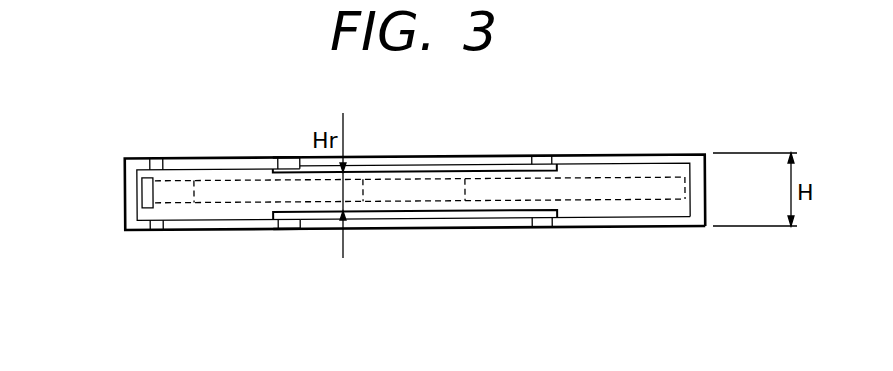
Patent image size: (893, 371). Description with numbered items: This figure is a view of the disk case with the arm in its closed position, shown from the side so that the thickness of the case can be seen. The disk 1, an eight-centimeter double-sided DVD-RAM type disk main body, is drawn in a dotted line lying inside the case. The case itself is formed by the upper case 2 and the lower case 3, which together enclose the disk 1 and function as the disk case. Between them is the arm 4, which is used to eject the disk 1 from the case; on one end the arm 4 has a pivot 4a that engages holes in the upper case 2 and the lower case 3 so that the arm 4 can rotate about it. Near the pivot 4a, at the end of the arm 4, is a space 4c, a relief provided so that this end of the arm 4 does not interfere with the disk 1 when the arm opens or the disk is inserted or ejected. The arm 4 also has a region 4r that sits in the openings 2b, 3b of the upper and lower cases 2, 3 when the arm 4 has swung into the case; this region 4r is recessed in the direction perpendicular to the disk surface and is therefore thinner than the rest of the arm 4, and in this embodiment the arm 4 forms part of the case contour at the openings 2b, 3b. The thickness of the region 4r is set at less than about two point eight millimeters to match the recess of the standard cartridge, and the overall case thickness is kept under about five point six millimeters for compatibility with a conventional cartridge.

The disk main body 1 is at (619, 192).
The upper case body 2 is at (667, 160).
The opening of upper case 2b is at (505, 162).
The lower case body 3 is at (584, 225).
The opening of lower case 3b is at (373, 226).
The arm 4 is at (232, 176).
The pivot 4a is at (153, 162).
The space 4c is at (136, 182).
The region of arm 4r is at (483, 205).